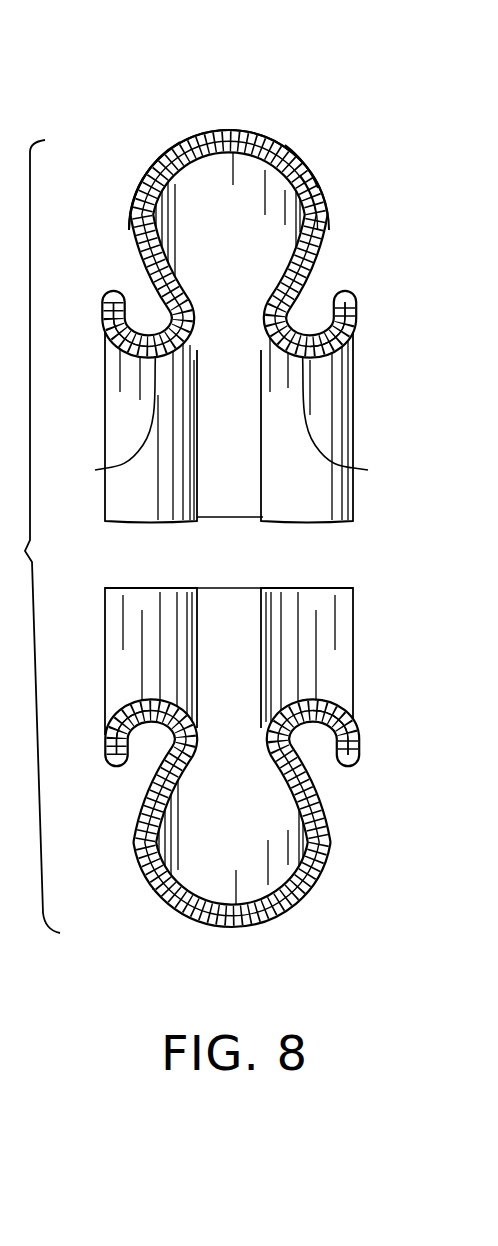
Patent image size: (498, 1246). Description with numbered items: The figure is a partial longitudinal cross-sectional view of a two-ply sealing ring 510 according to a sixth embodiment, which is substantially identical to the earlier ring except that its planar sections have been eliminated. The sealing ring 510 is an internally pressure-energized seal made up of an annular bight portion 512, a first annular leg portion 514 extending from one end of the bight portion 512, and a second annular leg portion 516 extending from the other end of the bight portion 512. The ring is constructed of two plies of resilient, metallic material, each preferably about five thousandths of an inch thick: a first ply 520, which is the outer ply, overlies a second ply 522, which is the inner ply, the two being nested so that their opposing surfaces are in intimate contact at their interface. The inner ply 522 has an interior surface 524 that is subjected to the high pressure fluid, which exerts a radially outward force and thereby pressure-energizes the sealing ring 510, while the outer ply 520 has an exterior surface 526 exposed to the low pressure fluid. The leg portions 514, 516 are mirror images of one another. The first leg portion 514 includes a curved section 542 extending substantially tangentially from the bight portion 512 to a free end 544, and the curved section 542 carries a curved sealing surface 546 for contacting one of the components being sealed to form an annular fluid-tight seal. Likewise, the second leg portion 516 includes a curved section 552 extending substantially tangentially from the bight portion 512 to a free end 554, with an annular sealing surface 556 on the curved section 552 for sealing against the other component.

The two-ply sealing ring 510 is at (232, 100).
The annular bight portion 512 is at (245, 124).
The first annular leg portion 514 is at (108, 407).
The second annular leg portion 516 is at (350, 407).
The first ply 520 is at (308, 160).
The second ply 522 is at (322, 195).
The interior surface 524 is at (275, 175).
The exterior surface 526 is at (150, 168).
The curved section 542 is at (97, 414).
The free end 544 is at (116, 288).
The curved sealing surface 546 is at (100, 318).
The curved section 552 is at (363, 414).
The free end 554 is at (342, 290).
The annular sealing surface 556 is at (357, 318).